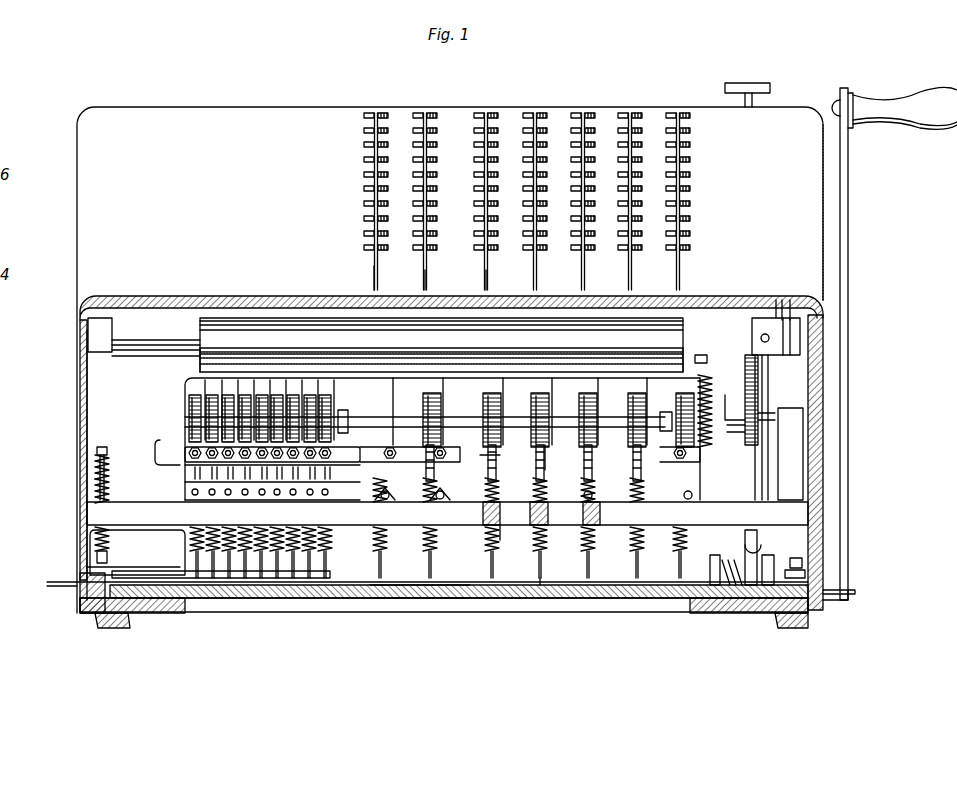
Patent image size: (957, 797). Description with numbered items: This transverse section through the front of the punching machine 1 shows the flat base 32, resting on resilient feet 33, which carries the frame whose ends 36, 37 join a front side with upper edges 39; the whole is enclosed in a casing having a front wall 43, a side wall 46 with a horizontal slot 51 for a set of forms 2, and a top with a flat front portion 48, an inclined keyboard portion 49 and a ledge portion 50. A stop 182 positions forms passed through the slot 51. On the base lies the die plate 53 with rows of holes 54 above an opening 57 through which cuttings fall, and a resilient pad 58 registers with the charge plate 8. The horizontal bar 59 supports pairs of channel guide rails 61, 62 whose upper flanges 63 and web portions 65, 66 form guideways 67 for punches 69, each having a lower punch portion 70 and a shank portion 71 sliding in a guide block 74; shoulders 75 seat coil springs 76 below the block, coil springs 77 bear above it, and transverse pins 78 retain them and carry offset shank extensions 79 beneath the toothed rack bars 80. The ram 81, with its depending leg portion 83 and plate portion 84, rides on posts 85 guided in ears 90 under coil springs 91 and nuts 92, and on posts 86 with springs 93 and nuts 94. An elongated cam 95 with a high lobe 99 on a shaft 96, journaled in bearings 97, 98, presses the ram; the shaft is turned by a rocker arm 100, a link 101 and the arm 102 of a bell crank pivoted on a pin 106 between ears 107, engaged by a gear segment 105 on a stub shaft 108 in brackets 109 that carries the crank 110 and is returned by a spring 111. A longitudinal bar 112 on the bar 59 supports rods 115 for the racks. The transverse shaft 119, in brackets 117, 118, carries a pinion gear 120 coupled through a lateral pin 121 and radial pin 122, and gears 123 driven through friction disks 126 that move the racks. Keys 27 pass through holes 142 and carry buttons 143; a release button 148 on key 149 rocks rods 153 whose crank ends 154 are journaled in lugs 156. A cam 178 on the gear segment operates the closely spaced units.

The punching machine 1 is at (80, 115).
The base plate 2 is at (78, 590).
The charge plate 8 is at (258, 598).
The key stem 27 is at (372, 270).
The base 32 is at (355, 600).
The resilient feet 33 is at (110, 628).
The end 36 is at (92, 402).
The end 37 is at (815, 488).
The upper edges of front side 39 is at (80, 304).
The front wall 43 is at (73, 215).
The side wall 46 is at (80, 380).
The flat horizontal front portion 48 is at (288, 296).
The inclined keyboard portion 49 is at (84, 172).
The horizontal ledge portion 50 is at (182, 107).
The horizontal slot 51 is at (850, 593).
The die plate 53 is at (610, 600).
The rows of holes 54 is at (278, 600).
The opening 57 is at (425, 612).
The resilient pad 58 is at (96, 615).
The horizontal bar 59 is at (95, 514).
The channel shaped guide rail 61 is at (483, 506).
The channel shaped guide rail 62 is at (520, 530).
The upper flange 63 is at (485, 487).
The web portion 65 is at (488, 512).
The web portion 66 is at (530, 500).
The rectangular guideway 67 is at (484, 535).
The punches 69 is at (540, 580).
The lower punch portion 70 is at (318, 568).
The upper shank portion 71 is at (548, 543).
The guide block 74 is at (548, 512).
The shoulders 75 is at (545, 561).
The coil spring 76 is at (330, 544).
The coil spring 77 is at (605, 498).
The transverse pin 78 is at (498, 480).
The shank extension 79 is at (498, 406).
The rack bar 80 is at (600, 430).
The ram 81 is at (540, 372).
The depending leg portion 83 is at (185, 384).
The plate portion 84 is at (92, 562).
The posts 85 is at (95, 488).
The posts 86 is at (715, 368).
The ears 90 is at (90, 543).
The coil springs 91 is at (95, 468).
The nuts 92 is at (92, 443).
The coil springs 93 is at (744, 385).
The nuts 94 is at (703, 355).
The elongated cam 95 is at (229, 318).
The shaft 96 is at (90, 350).
The bearing 97 is at (98, 330).
The bearing 98 is at (790, 325).
The high lobe portion 99 is at (195, 356).
The rocker arm 100 is at (805, 300).
The link 101 is at (770, 362).
The arm 102 is at (770, 612).
The gear segment 105 is at (756, 470).
The pin 106 is at (805, 575).
The ears 107 is at (792, 622).
The stub shaft 108 is at (802, 560).
The brackets 109 is at (700, 612).
The crank 110 is at (850, 215).
The spring 111 is at (738, 560).
The longitudinal bar 112 is at (175, 455).
The rod 115 is at (482, 458).
The bracket 117 is at (170, 410).
The bracket 118 is at (798, 440).
The transverse shaft 119 is at (462, 418).
The pinion gear 120 is at (740, 412).
The laterally extending pin 121 is at (762, 398).
The radial pin 122 is at (770, 408).
The gears 123 is at (230, 398).
The friction disk 126 is at (549, 415).
The holes 142 is at (484, 288).
The buttons 143 is at (470, 109).
The release button 148 is at (770, 88).
The key 149 is at (752, 98).
The rods 153 is at (548, 470).
The crank end 154 is at (380, 500).
The lug 156 is at (442, 500).
The cam 178 is at (698, 394).
The stop 182 is at (77, 608).